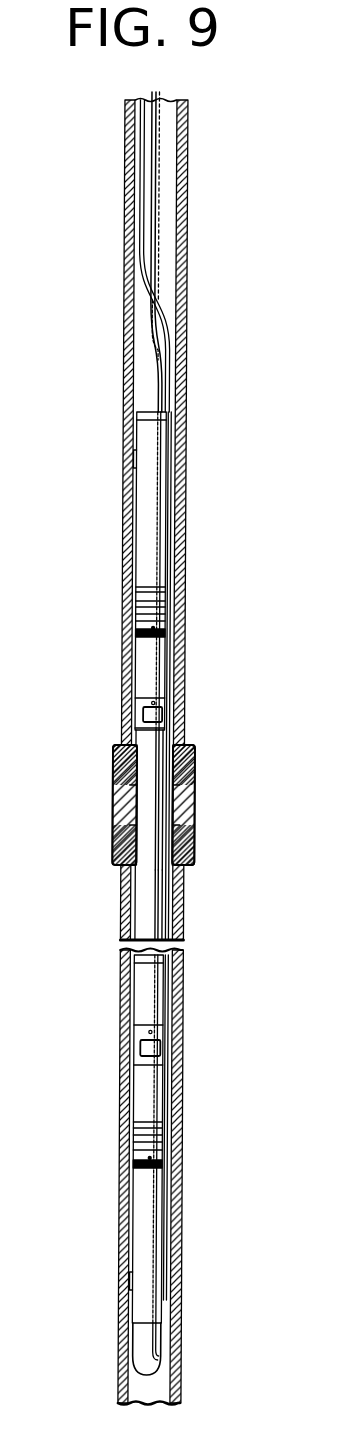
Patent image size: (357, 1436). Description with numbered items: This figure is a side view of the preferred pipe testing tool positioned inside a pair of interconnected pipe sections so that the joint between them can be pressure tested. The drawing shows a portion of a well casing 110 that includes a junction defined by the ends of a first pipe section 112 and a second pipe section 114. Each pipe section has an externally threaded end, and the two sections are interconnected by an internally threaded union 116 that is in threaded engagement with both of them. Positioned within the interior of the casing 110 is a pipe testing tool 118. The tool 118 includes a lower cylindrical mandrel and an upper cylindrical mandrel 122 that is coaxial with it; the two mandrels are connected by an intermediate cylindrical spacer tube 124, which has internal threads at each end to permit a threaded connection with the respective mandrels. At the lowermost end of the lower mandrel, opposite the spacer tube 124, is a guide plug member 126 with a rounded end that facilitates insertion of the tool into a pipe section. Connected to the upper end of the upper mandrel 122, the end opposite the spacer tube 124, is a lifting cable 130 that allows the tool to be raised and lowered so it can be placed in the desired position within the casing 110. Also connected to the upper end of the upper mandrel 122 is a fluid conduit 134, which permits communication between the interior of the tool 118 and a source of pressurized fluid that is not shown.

The well casing 110 is at (210, 389).
The first pipe section 112 is at (181, 492).
The second pipe section 114 is at (184, 1082).
The internally threaded union 116 is at (190, 811).
The pipe testing tool 118 is at (195, 1007).
The upper cylindrical mandrel 122 is at (152, 547).
The intermediate cylindrical spacer tube 124 is at (157, 751).
The guide plug member 126 is at (161, 1347).
The lifting cable 130 is at (160, 174).
The fluid conduit 134 is at (163, 340).